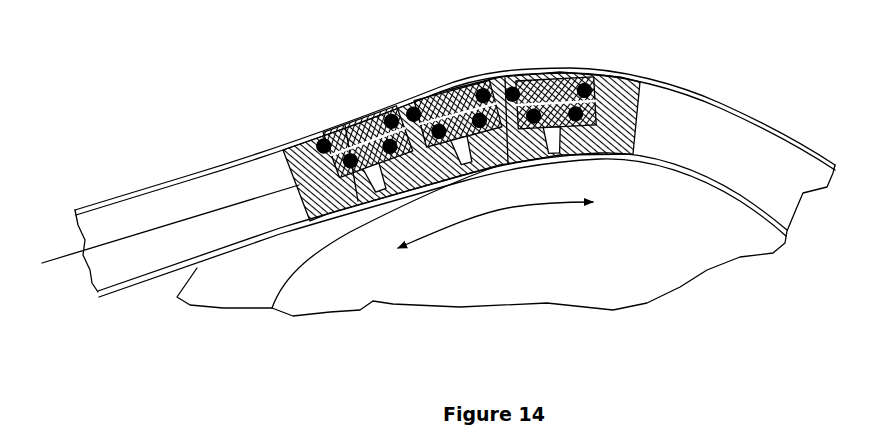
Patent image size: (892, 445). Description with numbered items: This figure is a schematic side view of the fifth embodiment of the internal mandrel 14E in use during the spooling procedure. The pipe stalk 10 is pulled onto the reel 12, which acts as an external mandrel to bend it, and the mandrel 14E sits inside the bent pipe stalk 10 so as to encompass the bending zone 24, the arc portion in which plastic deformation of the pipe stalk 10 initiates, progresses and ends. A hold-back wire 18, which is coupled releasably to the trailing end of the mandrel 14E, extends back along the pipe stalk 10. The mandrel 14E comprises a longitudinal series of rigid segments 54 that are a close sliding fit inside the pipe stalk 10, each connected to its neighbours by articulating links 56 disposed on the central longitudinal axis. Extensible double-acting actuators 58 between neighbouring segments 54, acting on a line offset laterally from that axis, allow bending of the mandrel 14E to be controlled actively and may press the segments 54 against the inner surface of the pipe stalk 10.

The pipe stalk 10 is at (727, 102).
The reel 12 is at (682, 247).
The mandrel 14E is at (393, 85).
The hold-back wire 18 is at (197, 217).
The bending zone 24 is at (513, 208).
The rigid segments 54 is at (302, 138).
The articulating links 56 is at (382, 185).
The extensible double-acting actuators 58 is at (355, 118).